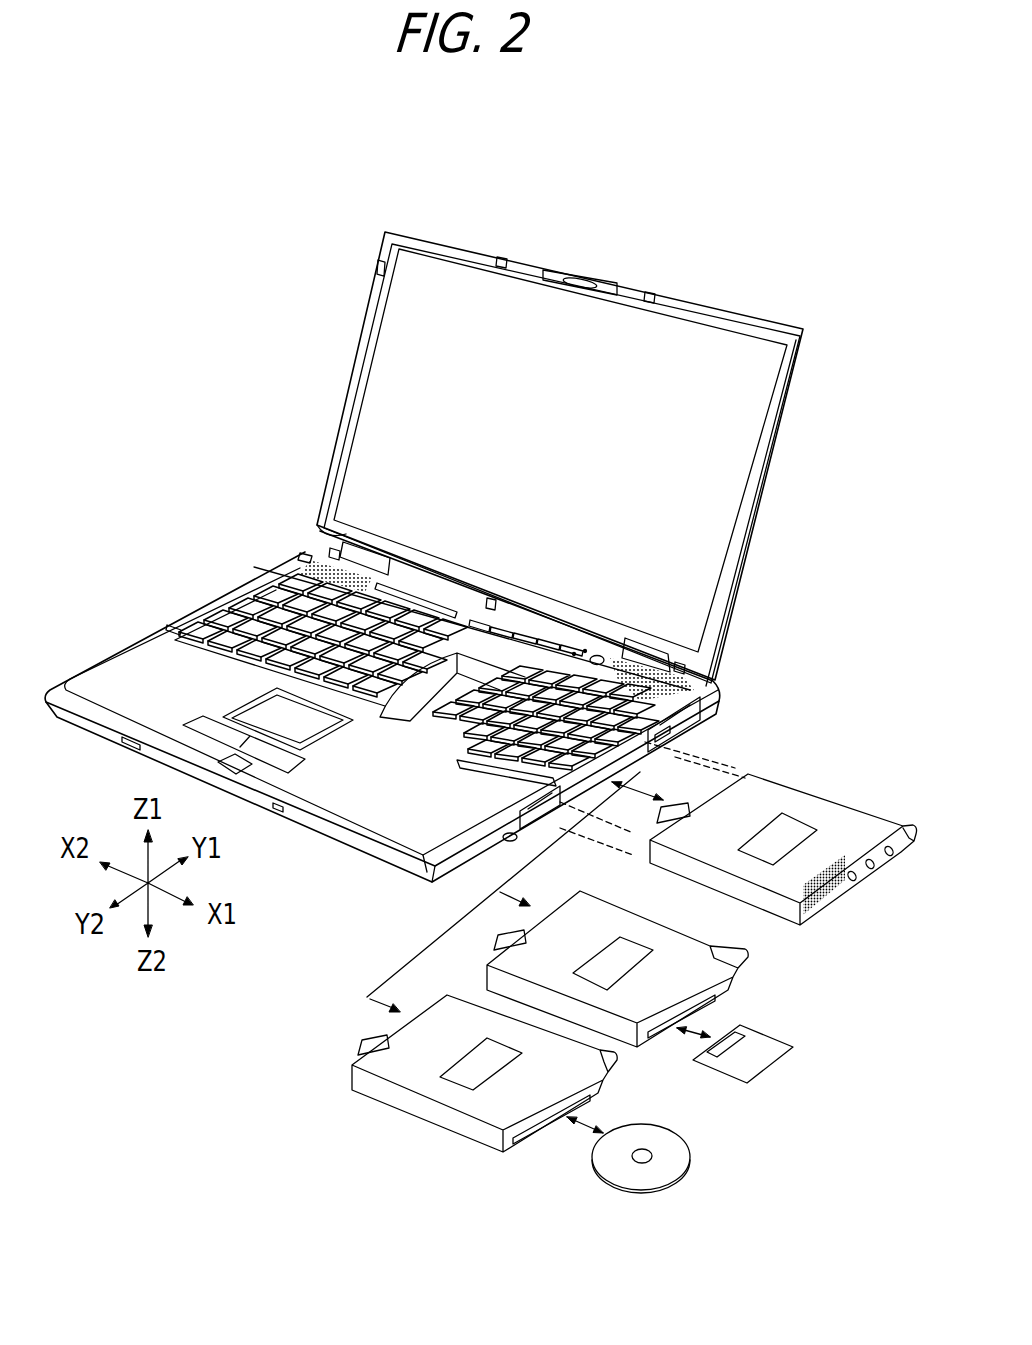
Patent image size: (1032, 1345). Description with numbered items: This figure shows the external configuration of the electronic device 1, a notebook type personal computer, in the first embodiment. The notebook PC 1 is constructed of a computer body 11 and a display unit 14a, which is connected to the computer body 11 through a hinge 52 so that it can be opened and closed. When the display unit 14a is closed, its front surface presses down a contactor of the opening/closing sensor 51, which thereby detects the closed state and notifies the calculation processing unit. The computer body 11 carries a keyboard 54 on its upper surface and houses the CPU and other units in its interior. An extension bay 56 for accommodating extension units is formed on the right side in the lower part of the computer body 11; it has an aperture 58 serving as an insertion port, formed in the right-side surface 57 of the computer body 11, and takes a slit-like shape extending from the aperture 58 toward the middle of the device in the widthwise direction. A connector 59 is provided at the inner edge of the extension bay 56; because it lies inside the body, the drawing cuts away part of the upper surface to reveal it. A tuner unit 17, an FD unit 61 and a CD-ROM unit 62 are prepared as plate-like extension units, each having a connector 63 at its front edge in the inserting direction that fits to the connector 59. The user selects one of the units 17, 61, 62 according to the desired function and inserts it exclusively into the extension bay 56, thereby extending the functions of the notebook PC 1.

The electronic device 1 is at (723, 305).
The computer body 11 is at (158, 667).
The display unit 14a is at (393, 388).
The tuner unit 17 is at (773, 908).
The opening/closing sensor 51 is at (307, 558).
The hinge 52 is at (362, 550).
The keyboard 54 is at (250, 610).
The extension bay 56 is at (430, 705).
The right-side surface 57 is at (483, 857).
The aperture 58 is at (683, 745).
The connector 59 is at (387, 700).
The FD unit 61 is at (623, 1040).
The CD-ROM unit 62 is at (450, 1120).
The connector 63 is at (653, 827).